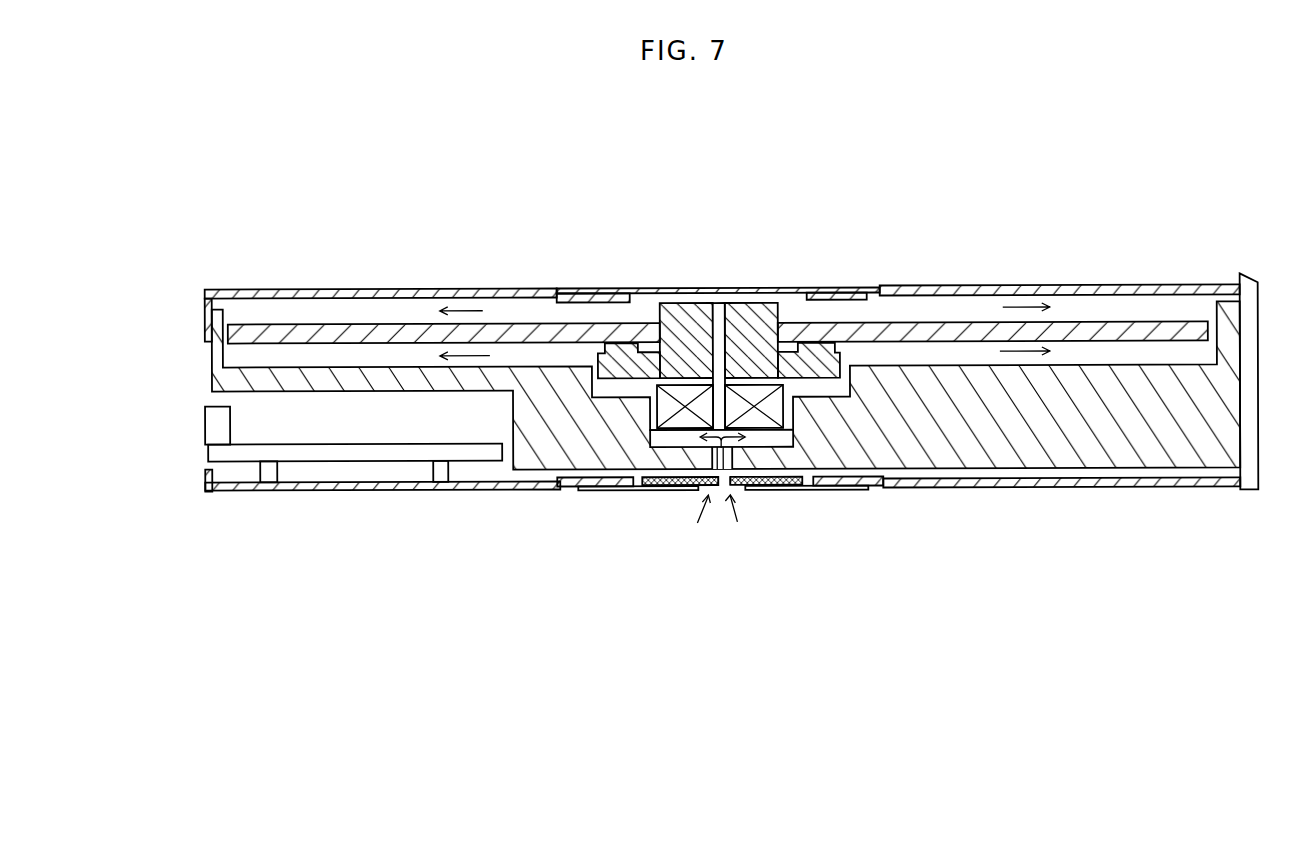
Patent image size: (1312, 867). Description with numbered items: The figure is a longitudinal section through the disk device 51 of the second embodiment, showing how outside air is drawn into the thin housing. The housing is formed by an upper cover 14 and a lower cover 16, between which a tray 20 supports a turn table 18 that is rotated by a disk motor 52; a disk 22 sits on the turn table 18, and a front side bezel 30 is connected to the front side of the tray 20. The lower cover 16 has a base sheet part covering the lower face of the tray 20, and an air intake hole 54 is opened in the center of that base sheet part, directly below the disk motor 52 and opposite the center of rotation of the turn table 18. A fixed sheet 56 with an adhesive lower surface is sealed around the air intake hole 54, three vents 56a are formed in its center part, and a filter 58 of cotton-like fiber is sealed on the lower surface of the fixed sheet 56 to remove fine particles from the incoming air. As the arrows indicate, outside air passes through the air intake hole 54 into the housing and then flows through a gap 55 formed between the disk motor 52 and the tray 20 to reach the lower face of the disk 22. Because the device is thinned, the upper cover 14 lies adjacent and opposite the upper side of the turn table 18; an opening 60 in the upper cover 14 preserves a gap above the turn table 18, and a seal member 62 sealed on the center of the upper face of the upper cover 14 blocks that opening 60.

The upper cover 14 is at (990, 288).
The lower cover 16 is at (1020, 492).
The turn table 18 is at (722, 305).
The tray 20 is at (207, 363).
The disk 22 is at (918, 330).
The front side bezel 30 is at (1253, 398).
The disk device 51 is at (972, 190).
The disk motor 52 is at (662, 416).
The air intake hole 54 is at (806, 474).
The gap 55 is at (677, 437).
The fixed sheet 56 is at (807, 488).
The vents 56a is at (740, 495).
The filter 58 is at (720, 493).
The opening 60 is at (795, 297).
The seal member 62 is at (855, 290).